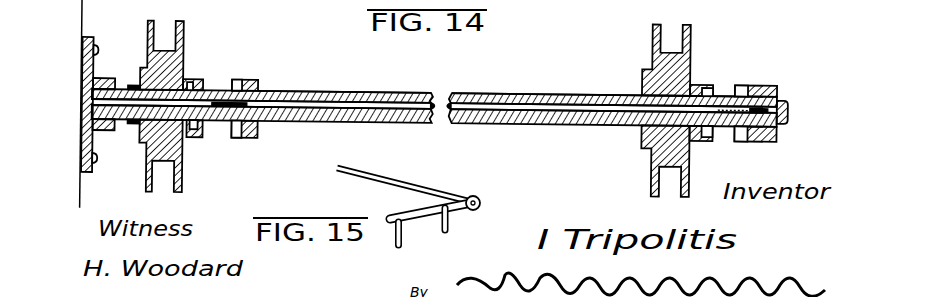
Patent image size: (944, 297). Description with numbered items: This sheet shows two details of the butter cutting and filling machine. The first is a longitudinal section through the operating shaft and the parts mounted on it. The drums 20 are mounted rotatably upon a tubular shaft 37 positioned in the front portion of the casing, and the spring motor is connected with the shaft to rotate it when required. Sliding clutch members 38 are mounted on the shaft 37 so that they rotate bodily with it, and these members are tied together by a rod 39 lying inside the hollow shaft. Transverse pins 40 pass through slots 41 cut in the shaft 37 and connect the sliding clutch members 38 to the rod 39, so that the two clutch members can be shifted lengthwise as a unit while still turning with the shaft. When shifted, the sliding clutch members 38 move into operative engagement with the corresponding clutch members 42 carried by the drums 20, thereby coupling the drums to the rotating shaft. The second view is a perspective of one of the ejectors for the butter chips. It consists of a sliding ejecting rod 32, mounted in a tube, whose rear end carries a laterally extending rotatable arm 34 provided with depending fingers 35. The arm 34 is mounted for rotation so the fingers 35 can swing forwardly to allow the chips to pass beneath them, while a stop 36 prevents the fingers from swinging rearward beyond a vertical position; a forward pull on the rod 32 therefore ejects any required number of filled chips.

In FIG. 14, the drum 20 is at (182, 60).
In FIG. 14, the tubular shaft 37 is at (518, 95).
In FIG. 14, the sliding clutch member 38 is at (250, 137).
In FIG. 14, the rod 39 is at (345, 107).
In FIG. 14, the transverse pin 40 is at (262, 93).
In FIG. 14, the slot 41 is at (222, 97).
In FIG. 14, the clutch member 42 is at (195, 137).
In FIG. 15, the ejecting rod 32 is at (437, 193).
In FIG. 15, the rotatable arm 34 is at (426, 215).
In FIG. 15, the depending finger 35 is at (396, 249).
In FIG. 15, the stop 36 is at (470, 210).